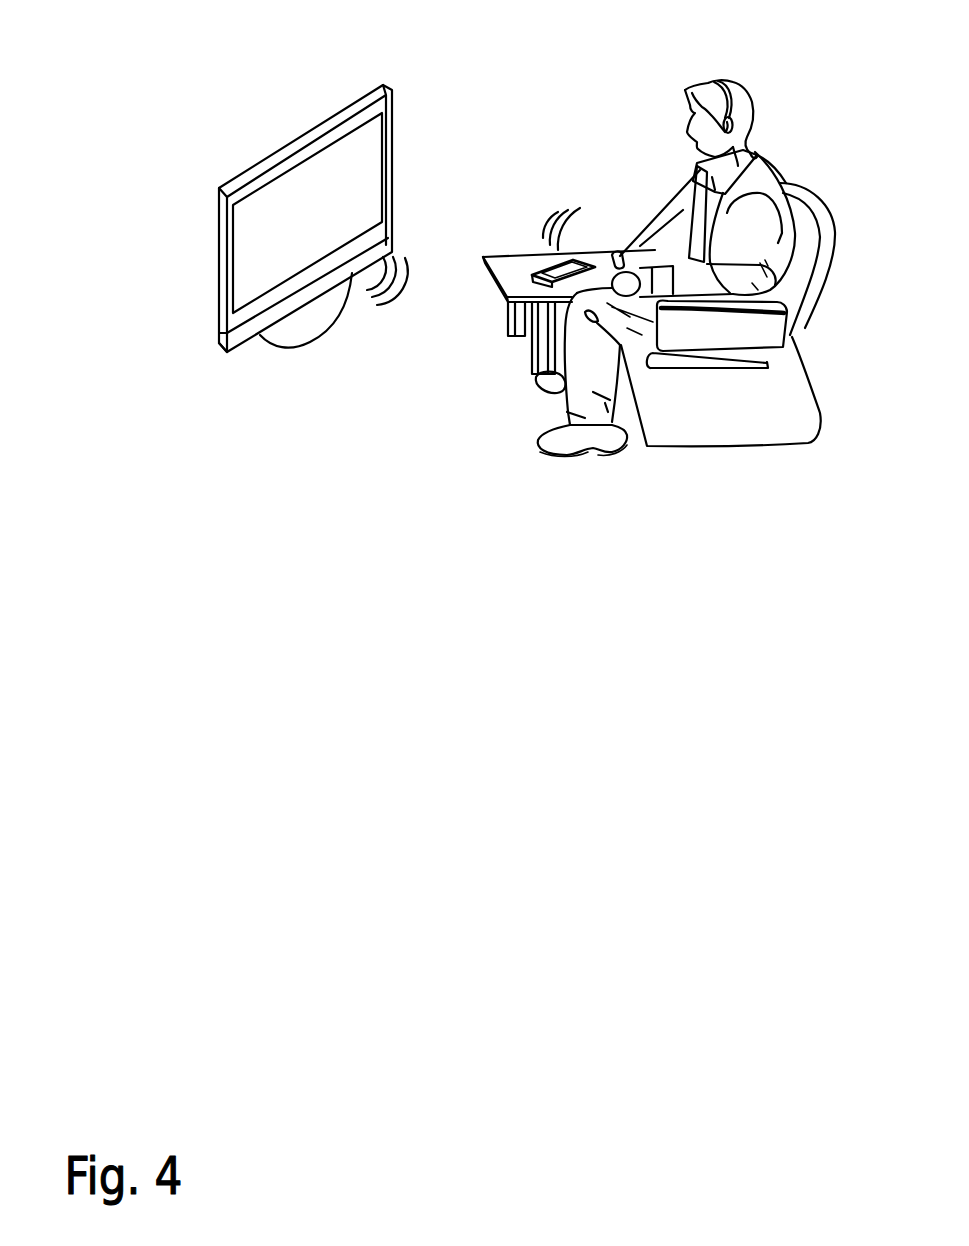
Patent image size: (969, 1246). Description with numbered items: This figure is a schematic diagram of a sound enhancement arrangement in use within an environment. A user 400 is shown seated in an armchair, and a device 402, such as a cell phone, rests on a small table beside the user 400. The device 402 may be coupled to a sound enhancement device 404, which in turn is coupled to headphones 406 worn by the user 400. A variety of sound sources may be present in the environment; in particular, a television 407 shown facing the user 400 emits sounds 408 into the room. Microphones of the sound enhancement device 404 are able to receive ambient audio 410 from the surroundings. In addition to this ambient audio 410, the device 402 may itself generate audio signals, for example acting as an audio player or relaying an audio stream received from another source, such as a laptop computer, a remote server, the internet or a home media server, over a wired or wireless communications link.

The user 400 is at (787, 98).
The device 402 is at (508, 294).
The sound enhancement device 404 is at (614, 252).
The headphones 406 is at (736, 122).
The television 407 is at (332, 118).
The sounds 408 is at (394, 305).
The ambient audio 410 is at (552, 228).